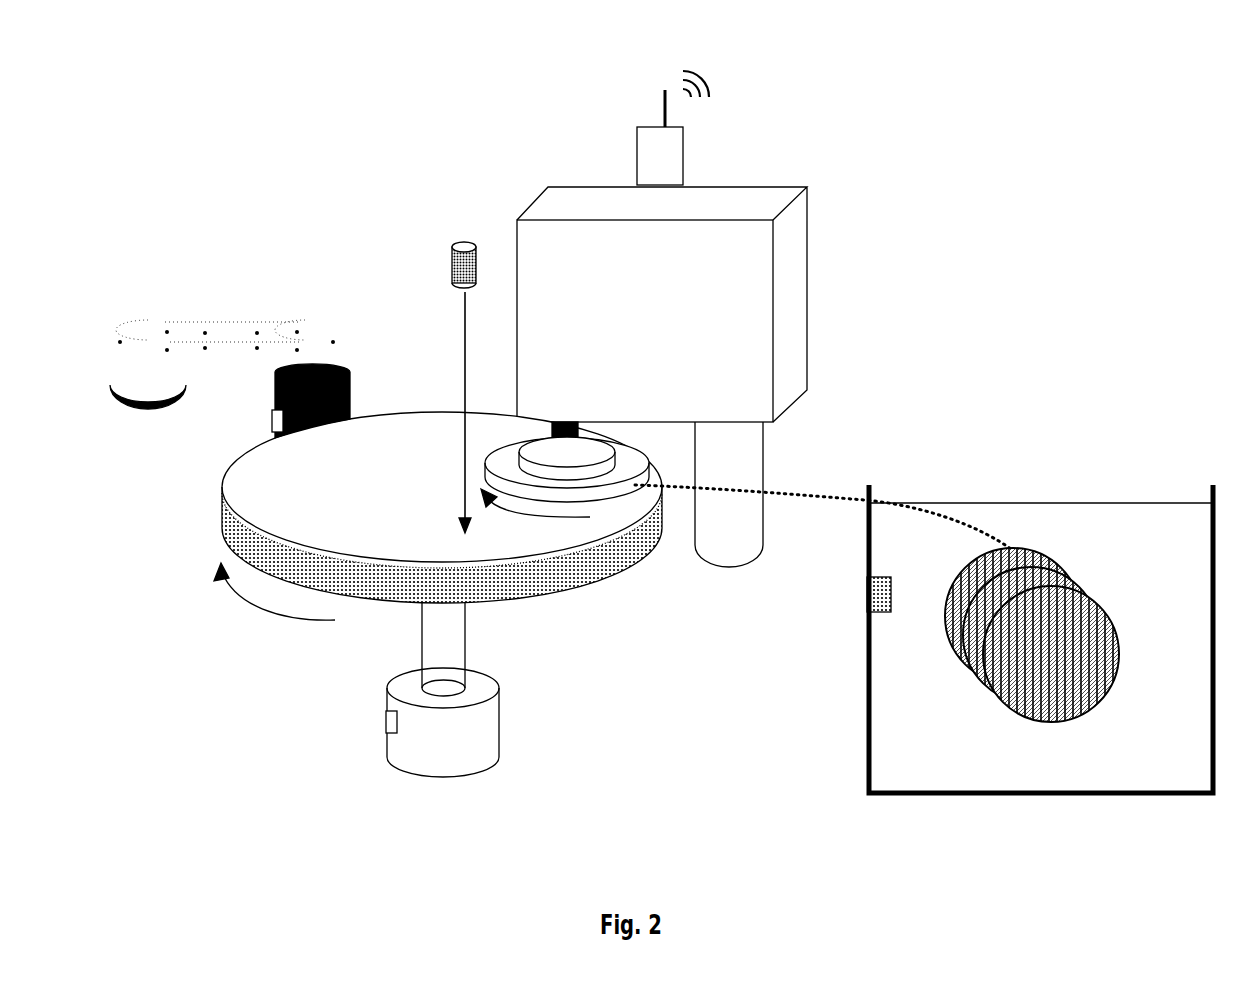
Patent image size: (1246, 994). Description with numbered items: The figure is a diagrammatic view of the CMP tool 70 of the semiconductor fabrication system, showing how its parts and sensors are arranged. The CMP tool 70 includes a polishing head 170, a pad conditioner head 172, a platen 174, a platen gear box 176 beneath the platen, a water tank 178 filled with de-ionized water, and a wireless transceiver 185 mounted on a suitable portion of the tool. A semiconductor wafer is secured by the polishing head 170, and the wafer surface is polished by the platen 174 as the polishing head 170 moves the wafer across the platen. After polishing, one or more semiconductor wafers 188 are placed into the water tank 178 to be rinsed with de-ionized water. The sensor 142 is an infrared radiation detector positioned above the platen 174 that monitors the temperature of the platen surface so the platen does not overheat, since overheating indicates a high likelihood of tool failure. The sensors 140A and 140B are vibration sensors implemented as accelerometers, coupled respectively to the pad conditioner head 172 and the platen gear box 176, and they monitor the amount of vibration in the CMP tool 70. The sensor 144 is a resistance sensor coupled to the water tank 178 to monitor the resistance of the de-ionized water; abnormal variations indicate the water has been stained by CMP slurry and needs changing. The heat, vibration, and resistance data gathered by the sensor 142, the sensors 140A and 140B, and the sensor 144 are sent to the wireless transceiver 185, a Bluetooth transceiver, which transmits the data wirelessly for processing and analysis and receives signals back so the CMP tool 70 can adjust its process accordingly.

The CMP tool 70 is at (245, 98).
The sensor 142 is at (463, 242).
The polishing head 170 is at (495, 462).
The pad conditioner head 172 is at (244, 330).
The sensor 140A is at (272, 418).
The platen 174 is at (575, 590).
The platen gear box 176 is at (500, 727).
The sensor 140B is at (386, 718).
The wireless transceiver 185 is at (637, 138).
The water tank 178 is at (1038, 468).
The sensor 144 is at (870, 596).
The semiconductor wafers 188 is at (1000, 668).